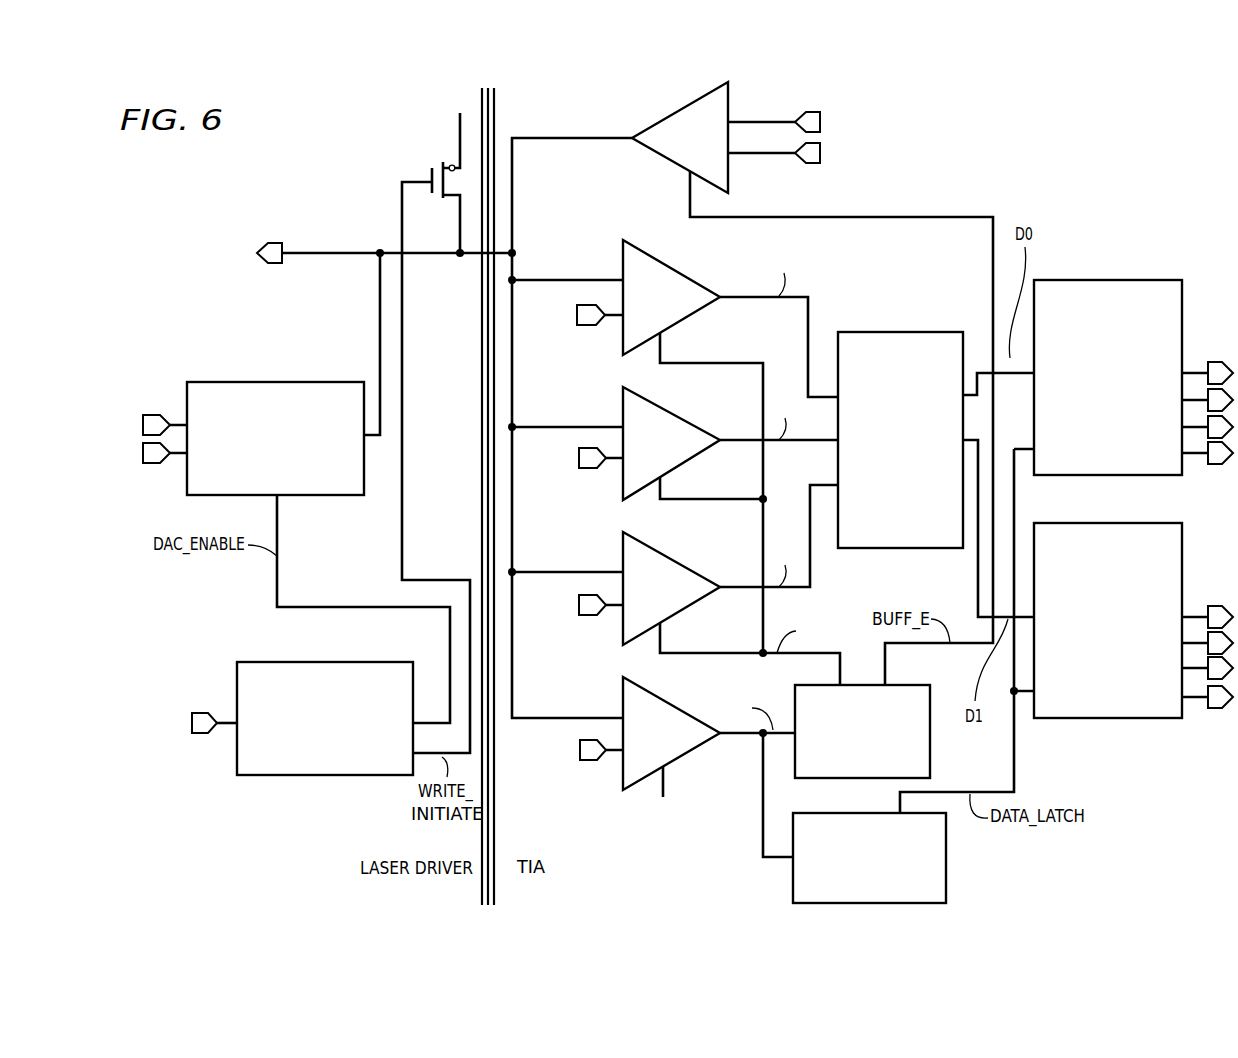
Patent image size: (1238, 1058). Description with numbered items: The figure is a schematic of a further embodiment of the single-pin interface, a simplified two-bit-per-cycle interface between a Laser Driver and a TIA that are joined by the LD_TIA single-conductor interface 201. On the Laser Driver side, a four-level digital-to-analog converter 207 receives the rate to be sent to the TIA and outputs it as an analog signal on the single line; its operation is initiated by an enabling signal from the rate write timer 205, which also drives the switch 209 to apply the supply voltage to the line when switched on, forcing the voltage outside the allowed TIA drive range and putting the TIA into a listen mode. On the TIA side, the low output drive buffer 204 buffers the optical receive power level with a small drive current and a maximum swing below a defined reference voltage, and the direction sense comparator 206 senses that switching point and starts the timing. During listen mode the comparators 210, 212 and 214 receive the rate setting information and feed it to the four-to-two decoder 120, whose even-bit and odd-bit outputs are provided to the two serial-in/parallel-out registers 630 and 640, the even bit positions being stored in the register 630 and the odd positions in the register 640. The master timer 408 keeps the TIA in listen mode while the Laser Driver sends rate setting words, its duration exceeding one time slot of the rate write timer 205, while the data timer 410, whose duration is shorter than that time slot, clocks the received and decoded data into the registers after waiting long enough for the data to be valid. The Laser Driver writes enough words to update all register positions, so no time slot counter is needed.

The switch 209 is at (432, 168).
The LD_TIA single-conductor interface 201 is at (477, 257).
The 4 level digital to analog converter (DAC) 207 is at (274, 382).
The rate write timer 205 is at (322, 662).
The TIA low output drive buffer 204 is at (663, 121).
The comparator 210 is at (688, 277).
The comparator 212 is at (688, 421).
The comparator 214 is at (688, 566).
The direction sense comparator 206 is at (623, 701).
The 4-2 decoder 120 is at (920, 332).
The serial-in/parallel-out register 630 is at (1085, 280).
The serial-in/parallel-out register 640 is at (1085, 523).
The master timer 408 is at (793, 755).
The data timer 410 is at (793, 833).